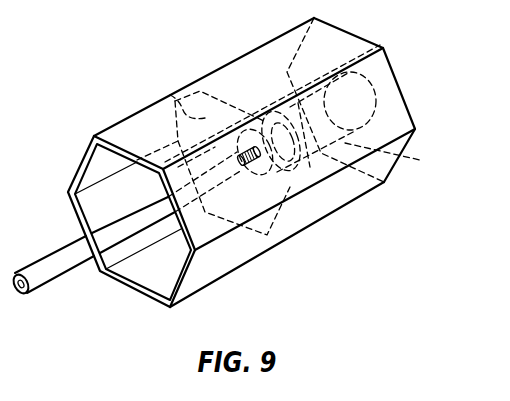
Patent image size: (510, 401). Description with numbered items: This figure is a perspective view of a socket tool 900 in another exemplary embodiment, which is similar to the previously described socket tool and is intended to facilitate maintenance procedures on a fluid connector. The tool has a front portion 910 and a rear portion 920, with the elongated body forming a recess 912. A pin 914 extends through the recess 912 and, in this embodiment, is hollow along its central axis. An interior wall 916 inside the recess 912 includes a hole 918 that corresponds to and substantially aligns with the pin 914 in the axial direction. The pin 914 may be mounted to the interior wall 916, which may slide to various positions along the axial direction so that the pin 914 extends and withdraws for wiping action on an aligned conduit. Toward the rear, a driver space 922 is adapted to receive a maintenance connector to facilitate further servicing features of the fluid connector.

The socket tool 900 is at (148, 47).
The front section of housing 910 is at (175, 314).
The recess 912 is at (148, 269).
The pin 914 is at (35, 279).
The interior wall 916 is at (170, 95).
The hole 918 is at (248, 145).
The rear section with drum 920 is at (290, 246).
The driver space 922 is at (400, 157).